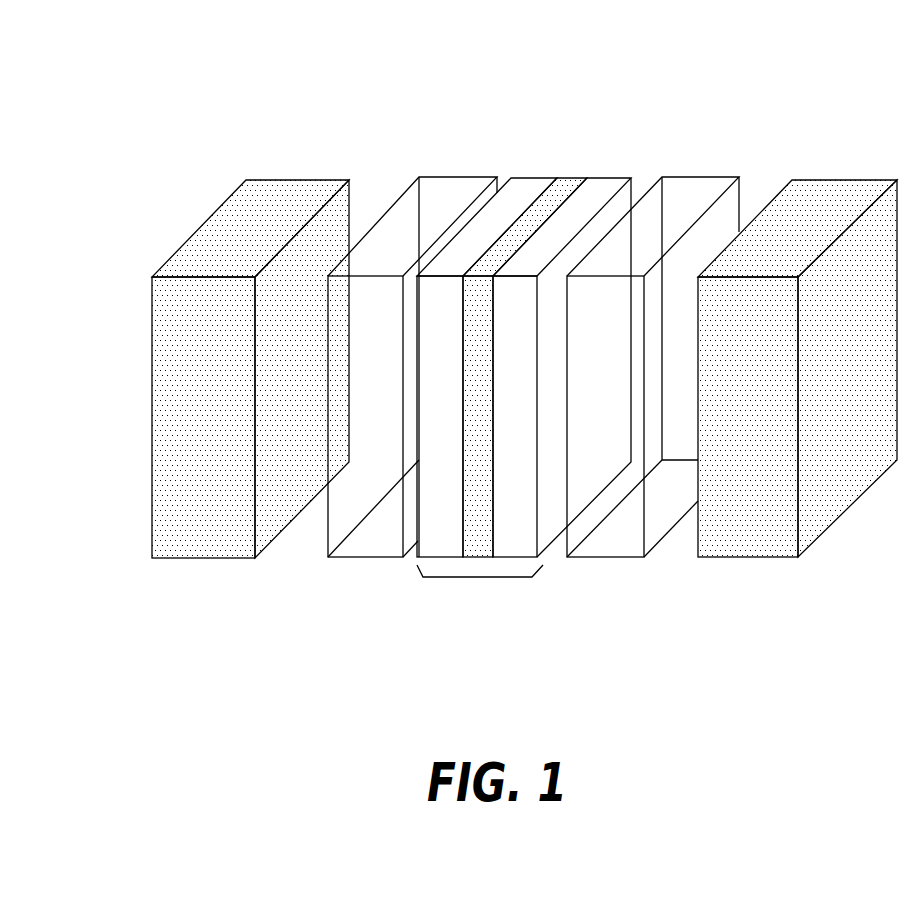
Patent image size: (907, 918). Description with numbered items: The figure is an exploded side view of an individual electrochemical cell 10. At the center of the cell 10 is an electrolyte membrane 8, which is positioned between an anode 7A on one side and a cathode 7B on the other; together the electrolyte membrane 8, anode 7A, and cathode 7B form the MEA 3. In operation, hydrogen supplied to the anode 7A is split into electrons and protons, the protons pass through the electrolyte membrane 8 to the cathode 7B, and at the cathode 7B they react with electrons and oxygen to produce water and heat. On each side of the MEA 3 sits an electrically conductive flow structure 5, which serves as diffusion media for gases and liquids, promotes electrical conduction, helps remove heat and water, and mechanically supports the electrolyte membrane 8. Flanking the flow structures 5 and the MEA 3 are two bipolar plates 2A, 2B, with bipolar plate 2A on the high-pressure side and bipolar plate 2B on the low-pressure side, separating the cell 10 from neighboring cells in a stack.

The electrochemical cell 10 is at (745, 78).
The bipolar plate 2A is at (178, 567).
The bipolar plate 2B is at (750, 567).
The electrically conductive flow structure 5 is at (364, 567).
The MEA 3 is at (541, 361).
The anode 7A is at (520, 170).
The electrolyte membrane 8 is at (563, 170).
The cathode 7B is at (606, 170).